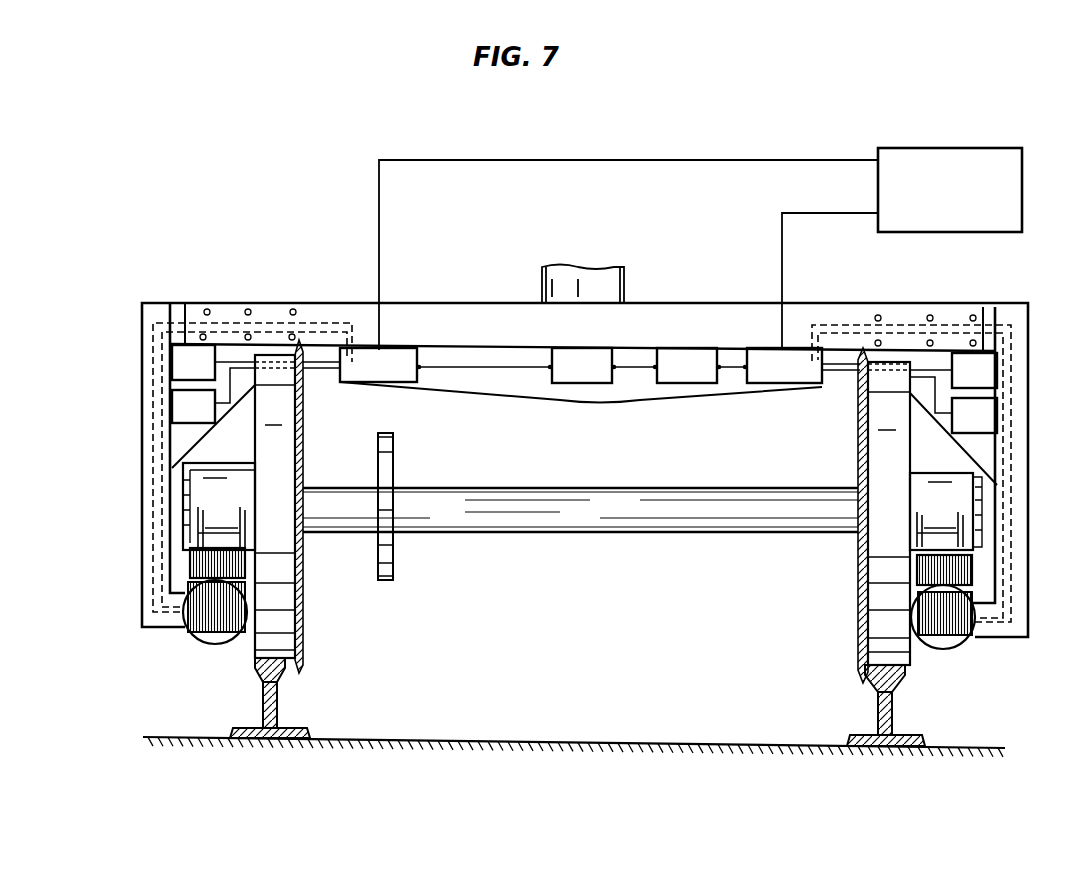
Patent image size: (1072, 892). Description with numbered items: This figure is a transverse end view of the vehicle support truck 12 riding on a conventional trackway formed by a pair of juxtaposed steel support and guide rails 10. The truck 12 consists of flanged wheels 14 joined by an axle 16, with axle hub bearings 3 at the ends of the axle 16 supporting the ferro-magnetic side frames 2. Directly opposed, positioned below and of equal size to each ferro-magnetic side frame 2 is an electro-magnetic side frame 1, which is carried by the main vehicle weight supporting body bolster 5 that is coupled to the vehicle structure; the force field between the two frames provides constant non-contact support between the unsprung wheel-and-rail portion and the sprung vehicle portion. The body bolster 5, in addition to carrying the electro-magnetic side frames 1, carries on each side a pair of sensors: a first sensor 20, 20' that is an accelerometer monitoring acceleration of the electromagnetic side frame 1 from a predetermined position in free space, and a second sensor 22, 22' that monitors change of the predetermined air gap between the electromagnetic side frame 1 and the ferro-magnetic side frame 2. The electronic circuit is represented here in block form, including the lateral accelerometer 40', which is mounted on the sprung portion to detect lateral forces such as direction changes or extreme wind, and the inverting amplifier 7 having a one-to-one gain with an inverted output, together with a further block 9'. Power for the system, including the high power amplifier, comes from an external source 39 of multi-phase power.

The electro-magnetic side frame 1 is at (197, 632).
The ferro-magnetic side frame 2 is at (1044, 553).
The axle hub bearing 3 is at (184, 486).
The body bolster 5 is at (308, 303).
The inverting amplifier 7 is at (702, 365).
The sensor unit 9' is at (803, 365).
The support and guide rail 10 is at (280, 701).
The vehicle support truck 12 is at (257, 251).
The flanged wheel 14 is at (283, 446).
The axle 16 is at (591, 534).
The first sensor 20 is at (213, 362).
The first sensor 20' is at (953, 370).
The second sensor 22 is at (213, 395).
The second sensor 22' is at (953, 405).
The external source of multi-phase power 39 is at (700, 249).
The lateral accelerometer 40' is at (537, 365).